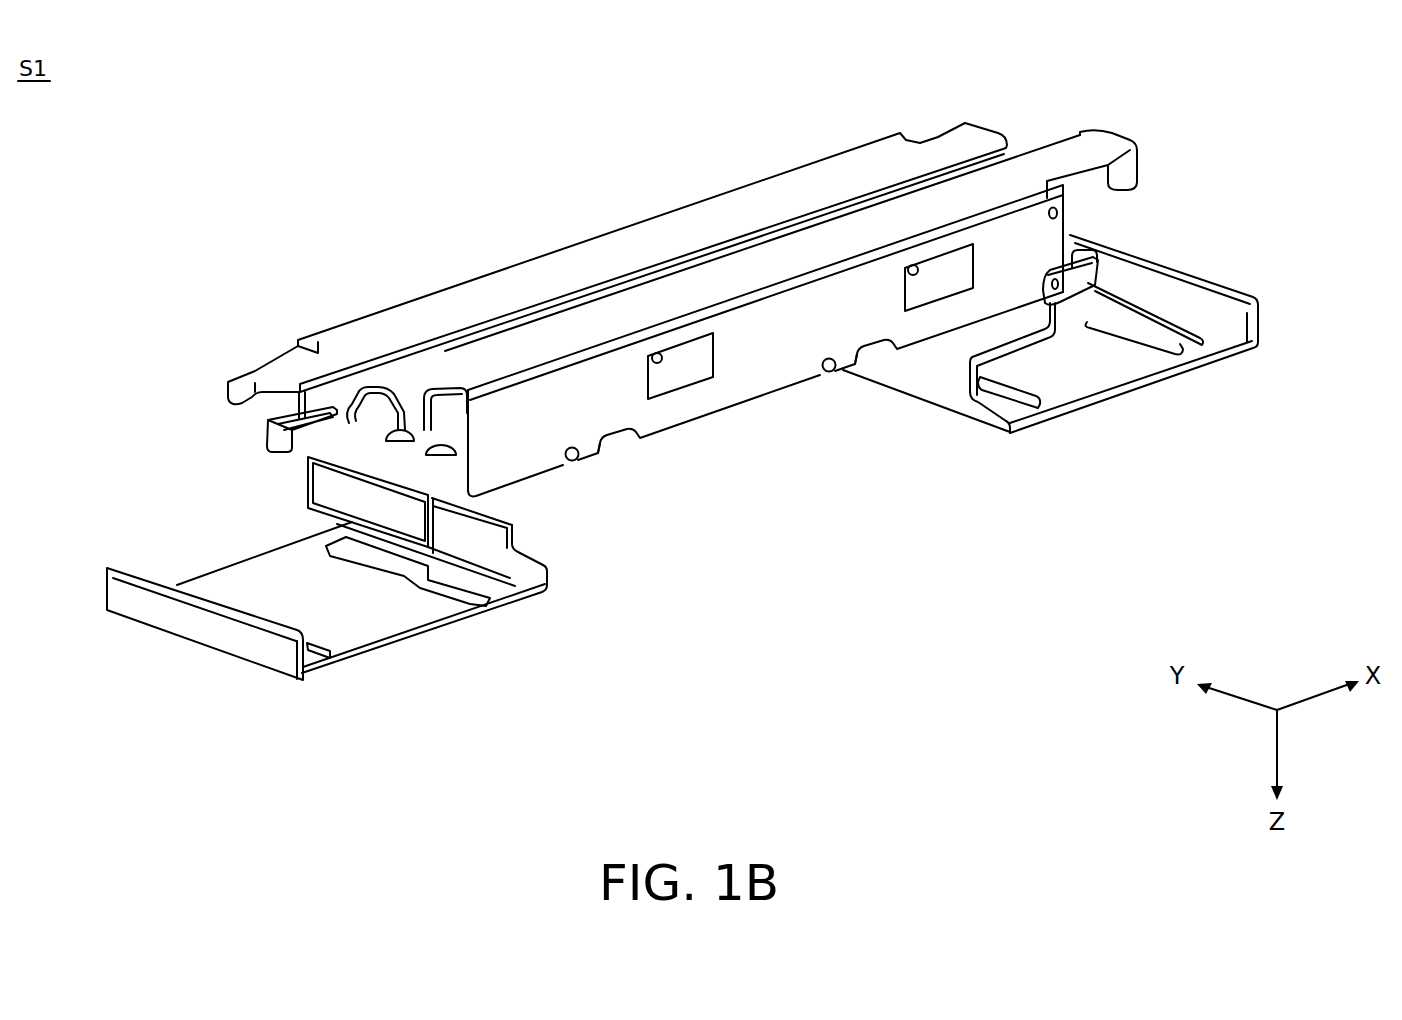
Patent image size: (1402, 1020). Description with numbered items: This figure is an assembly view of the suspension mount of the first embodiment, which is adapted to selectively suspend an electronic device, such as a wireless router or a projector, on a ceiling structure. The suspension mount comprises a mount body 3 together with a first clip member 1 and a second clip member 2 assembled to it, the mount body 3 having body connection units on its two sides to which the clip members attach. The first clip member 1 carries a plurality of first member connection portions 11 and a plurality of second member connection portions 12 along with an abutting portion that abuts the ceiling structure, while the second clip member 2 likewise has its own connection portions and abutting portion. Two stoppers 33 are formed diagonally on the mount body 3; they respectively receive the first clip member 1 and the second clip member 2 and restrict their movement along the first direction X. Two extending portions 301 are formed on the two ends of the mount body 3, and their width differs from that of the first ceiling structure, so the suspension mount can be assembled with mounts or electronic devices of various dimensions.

The first clip member 1 is at (1137, 126).
The second clip member 2 is at (997, 107).
The mount body 3 is at (1167, 244).
The first member connection portions 11 is at (584, 458).
The second member connection portions 12 is at (678, 358).
The stoppers 33 is at (266, 437).
The extending portions 301 is at (390, 634).